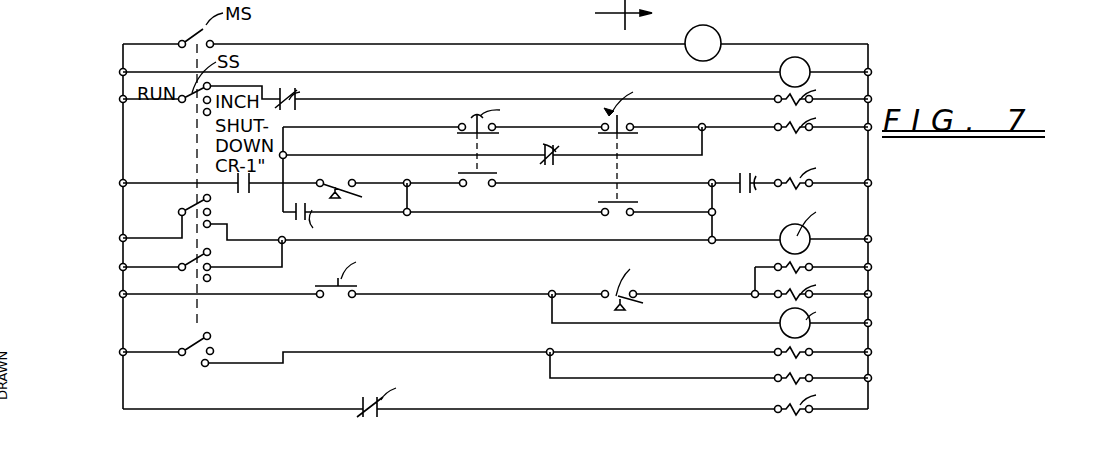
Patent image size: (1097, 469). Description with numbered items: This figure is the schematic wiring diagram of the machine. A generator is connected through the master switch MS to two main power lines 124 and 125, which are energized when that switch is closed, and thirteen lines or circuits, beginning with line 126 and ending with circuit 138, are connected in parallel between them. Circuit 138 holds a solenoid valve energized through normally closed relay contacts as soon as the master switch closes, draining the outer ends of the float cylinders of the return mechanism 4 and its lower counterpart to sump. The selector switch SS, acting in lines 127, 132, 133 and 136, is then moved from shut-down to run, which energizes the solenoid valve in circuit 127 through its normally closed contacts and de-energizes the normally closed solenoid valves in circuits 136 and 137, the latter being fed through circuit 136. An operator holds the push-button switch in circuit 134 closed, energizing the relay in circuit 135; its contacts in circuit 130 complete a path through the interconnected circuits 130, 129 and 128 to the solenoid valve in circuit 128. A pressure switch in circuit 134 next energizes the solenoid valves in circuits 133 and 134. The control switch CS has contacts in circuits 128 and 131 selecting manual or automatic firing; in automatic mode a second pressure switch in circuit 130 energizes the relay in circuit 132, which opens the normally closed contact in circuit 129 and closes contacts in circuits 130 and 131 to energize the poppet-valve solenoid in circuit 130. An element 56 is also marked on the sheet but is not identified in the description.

The return mechanism 4 is at (623, 17).
The component 56 is at (358, 6).
The main power line 124 is at (122, 148).
The main power line 125 is at (870, 166).
The line or circuit 126 is at (413, 58).
The circuit 127 is at (413, 85).
The circuit 128 is at (394, 127).
The circuit 129 is at (394, 155).
The circuit 130 is at (404, 183).
The circuit 131 is at (411, 212).
The circuit 132 is at (411, 240).
The circuit 133 is at (218, 267).
The circuit 134 is at (241, 280).
The circuit 135 is at (658, 323).
The circuit 136 is at (658, 352).
The circuit 137 is at (655, 378).
The circuit 138 is at (650, 409).